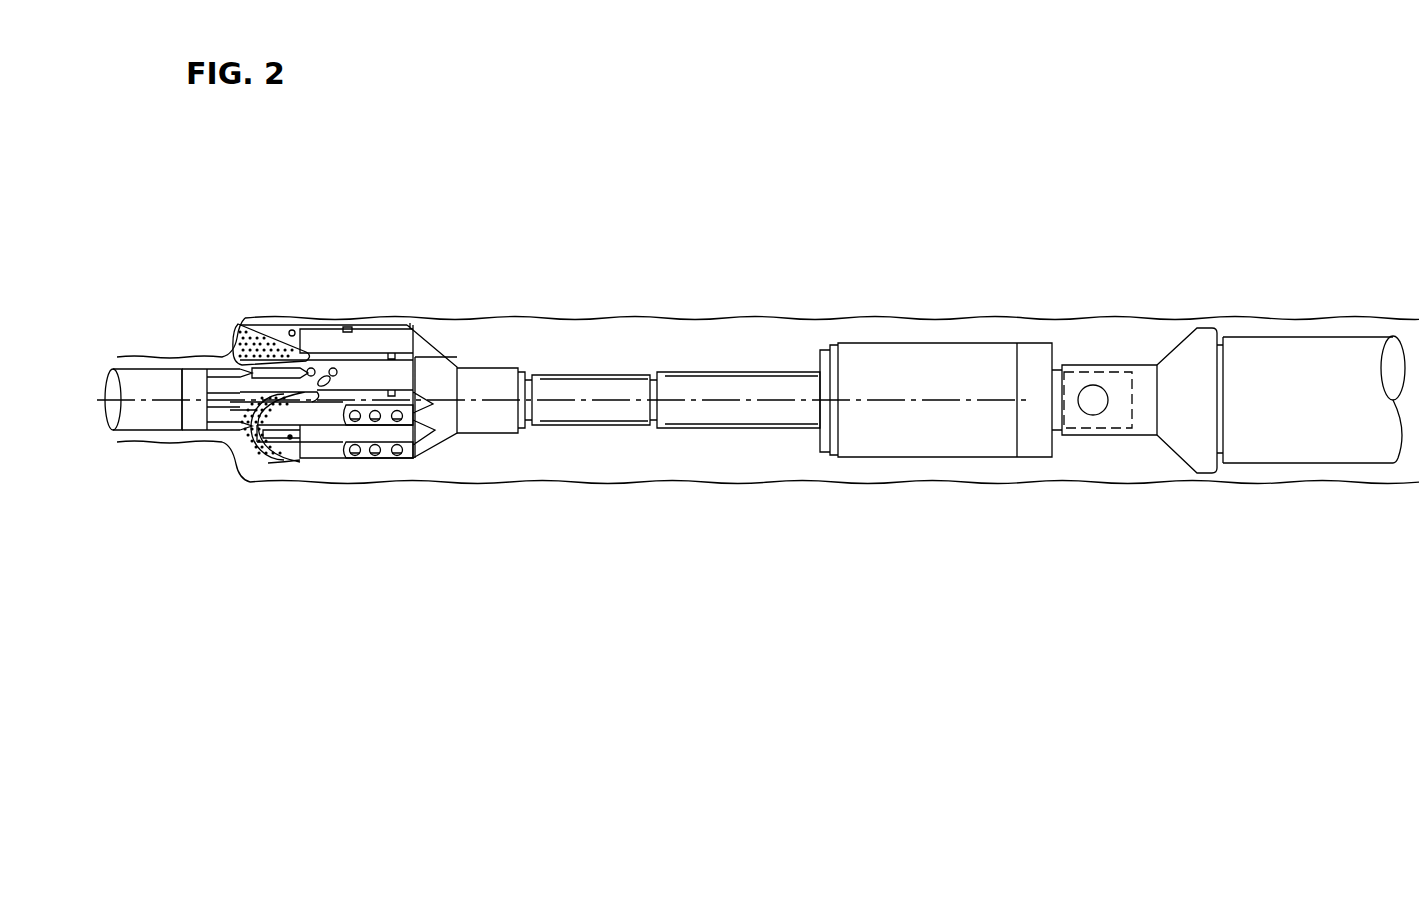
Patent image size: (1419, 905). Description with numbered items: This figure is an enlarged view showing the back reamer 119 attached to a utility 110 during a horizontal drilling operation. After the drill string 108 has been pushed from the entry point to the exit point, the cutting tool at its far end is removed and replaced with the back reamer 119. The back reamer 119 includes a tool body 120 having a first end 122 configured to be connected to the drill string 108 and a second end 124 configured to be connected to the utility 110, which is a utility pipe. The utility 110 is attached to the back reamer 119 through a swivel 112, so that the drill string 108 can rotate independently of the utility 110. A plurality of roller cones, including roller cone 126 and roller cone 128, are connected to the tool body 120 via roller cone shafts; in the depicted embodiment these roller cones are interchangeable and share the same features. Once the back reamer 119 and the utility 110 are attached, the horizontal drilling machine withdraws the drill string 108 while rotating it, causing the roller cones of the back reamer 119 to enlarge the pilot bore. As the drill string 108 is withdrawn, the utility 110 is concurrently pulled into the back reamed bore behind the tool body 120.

The drill string 108 is at (148, 387).
The utility 110 is at (1325, 413).
The swivel 112 is at (1183, 436).
The back reamer 119 is at (440, 345).
The tool body 120 is at (390, 386).
The first end 122 is at (177, 449).
The second end 124 is at (471, 440).
The roller cone 126 is at (268, 473).
The roller cone 128 is at (233, 322).